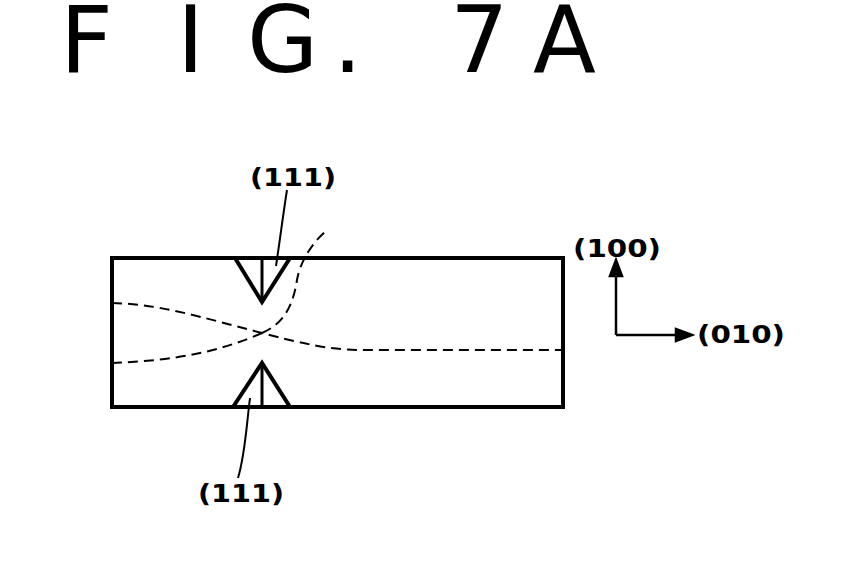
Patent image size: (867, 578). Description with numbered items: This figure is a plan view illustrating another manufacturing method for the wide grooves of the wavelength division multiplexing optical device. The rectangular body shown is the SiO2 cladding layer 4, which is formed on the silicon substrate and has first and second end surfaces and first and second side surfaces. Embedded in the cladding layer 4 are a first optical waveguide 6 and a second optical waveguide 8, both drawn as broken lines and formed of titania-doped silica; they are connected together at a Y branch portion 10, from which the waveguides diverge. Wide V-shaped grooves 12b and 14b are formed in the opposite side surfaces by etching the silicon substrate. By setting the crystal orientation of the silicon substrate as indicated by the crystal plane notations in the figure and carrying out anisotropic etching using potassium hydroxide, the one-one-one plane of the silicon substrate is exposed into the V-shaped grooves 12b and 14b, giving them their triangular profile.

The cladding layer 4 is at (462, 270).
The first optical waveguide 6 is at (417, 352).
The second optical waveguide 8 is at (177, 360).
The Y branch portion 10 is at (314, 274).
The wide V-shaped groove 12b is at (277, 398).
The wide V-shaped groove 14b is at (246, 268).